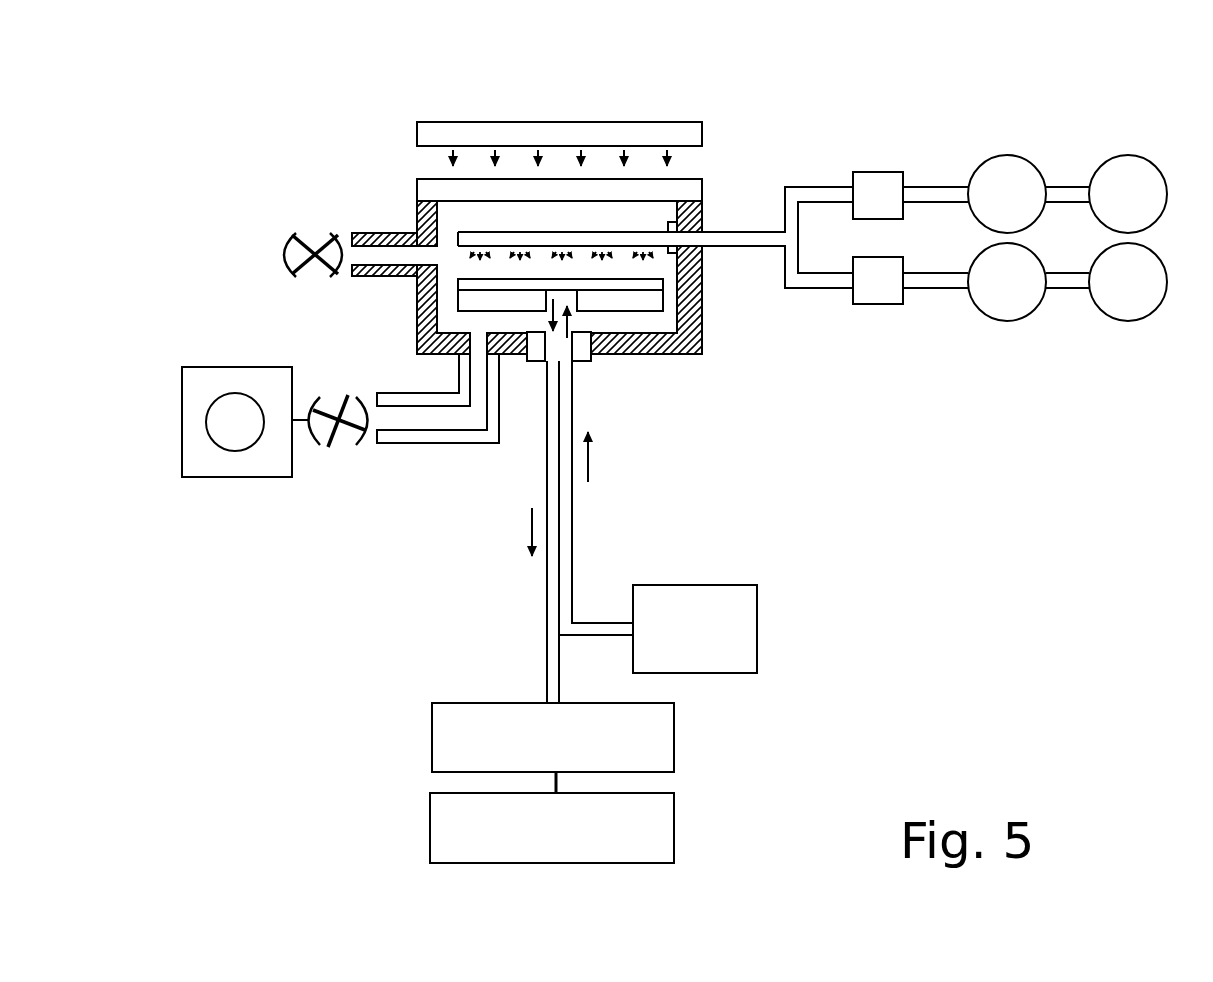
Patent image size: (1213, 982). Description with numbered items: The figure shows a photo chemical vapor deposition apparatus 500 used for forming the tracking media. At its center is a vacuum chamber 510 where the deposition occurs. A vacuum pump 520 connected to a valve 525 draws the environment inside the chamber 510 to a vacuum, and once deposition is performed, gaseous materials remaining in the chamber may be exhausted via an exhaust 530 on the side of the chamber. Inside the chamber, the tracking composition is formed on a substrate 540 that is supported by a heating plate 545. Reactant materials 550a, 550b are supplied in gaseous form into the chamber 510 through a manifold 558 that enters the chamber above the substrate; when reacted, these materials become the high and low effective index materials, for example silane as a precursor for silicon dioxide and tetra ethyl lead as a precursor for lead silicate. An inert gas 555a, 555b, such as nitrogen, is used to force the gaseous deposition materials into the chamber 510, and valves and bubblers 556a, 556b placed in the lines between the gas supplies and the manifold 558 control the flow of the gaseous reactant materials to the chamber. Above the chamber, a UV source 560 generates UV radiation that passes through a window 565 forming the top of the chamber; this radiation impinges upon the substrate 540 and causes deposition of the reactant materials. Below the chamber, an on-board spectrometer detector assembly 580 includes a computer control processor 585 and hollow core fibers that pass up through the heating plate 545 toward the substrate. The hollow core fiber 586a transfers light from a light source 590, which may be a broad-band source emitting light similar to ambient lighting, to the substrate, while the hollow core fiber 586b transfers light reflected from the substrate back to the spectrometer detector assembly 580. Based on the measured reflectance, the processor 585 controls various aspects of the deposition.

The photo chemical vapor deposition apparatus 500 is at (257, 118).
The vacuum chamber 510 is at (416, 221).
The vacuum pump 520 is at (228, 478).
The valve 525 is at (338, 448).
The exhaust 530 is at (280, 248).
The substrate 540 is at (663, 283).
The heating plate 545 is at (623, 311).
The reactant material 550a is at (1007, 155).
The reactant material 550b is at (1007, 321).
The inert gas 555a is at (1128, 155).
The inert gas 555b is at (1128, 321).
The valve and bubbler 556a is at (885, 170).
The valve and bubbler 556b is at (876, 318).
The manifold 558 is at (743, 228).
The UV source 560 is at (416, 140).
The window 565 is at (416, 187).
The on-board spectrometer detector assembly 580 is at (538, 747).
The computer control processor 585 is at (535, 837).
The hollow core fiber 586a is at (572, 512).
The hollow core fiber 586b is at (547, 482).
The light source 590 is at (677, 640).